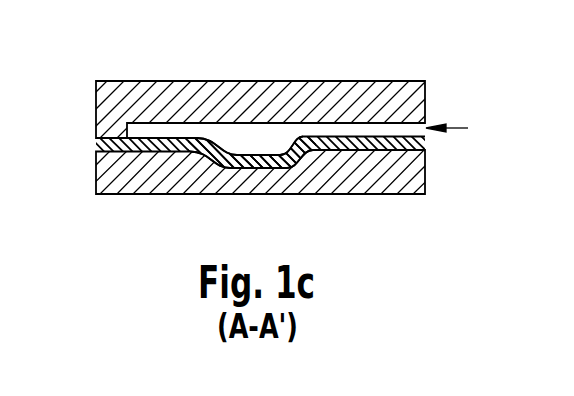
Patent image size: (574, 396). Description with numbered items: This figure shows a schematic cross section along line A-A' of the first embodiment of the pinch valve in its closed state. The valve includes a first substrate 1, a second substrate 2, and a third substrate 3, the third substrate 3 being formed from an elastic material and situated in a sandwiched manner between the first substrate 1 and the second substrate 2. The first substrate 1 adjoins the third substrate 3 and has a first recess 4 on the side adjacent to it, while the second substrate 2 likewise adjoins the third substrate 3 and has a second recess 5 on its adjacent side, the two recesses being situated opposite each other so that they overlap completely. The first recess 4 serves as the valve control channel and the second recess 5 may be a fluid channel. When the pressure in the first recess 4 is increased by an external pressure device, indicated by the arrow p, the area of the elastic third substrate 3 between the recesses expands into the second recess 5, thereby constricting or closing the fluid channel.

The first substrate 1 is at (262, 103).
The second substrate 2 is at (162, 172).
The third substrate 3 is at (350, 153).
The first recess 4 is at (367, 128).
The second recess 5 is at (275, 165).
The pressure p is at (460, 127).